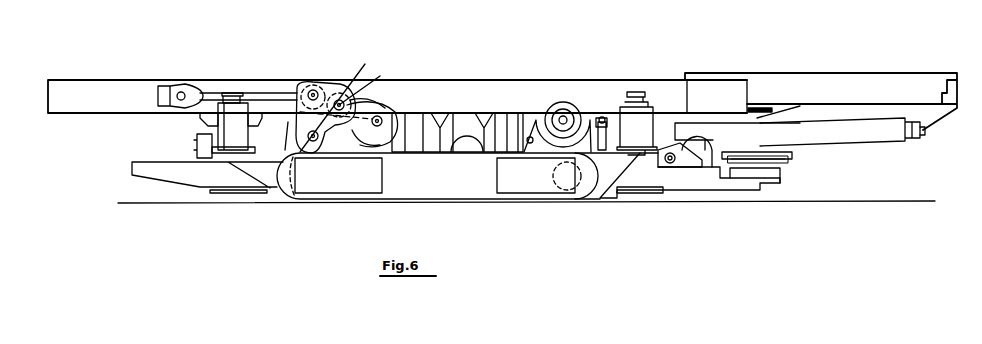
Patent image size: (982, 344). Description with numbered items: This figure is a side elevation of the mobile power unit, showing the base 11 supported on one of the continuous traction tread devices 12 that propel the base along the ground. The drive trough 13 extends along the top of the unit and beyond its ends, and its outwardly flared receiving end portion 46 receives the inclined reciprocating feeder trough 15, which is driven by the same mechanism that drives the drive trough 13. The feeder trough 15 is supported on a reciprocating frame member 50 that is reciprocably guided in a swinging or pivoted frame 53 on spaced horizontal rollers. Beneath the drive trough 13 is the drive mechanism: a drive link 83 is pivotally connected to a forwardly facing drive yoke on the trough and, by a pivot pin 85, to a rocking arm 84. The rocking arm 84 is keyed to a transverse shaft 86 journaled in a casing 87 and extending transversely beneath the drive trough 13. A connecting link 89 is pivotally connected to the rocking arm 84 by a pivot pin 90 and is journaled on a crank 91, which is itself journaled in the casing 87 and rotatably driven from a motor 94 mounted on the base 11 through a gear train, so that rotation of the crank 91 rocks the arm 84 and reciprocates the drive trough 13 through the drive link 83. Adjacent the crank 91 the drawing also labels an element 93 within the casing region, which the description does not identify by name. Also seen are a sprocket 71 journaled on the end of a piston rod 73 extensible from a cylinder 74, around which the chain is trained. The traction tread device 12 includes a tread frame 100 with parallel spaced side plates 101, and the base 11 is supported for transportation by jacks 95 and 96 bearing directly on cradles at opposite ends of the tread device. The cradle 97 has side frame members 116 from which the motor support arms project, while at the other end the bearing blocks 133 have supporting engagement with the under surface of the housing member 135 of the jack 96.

The base 11 is at (140, 182).
The continuous traction tread device 12 is at (578, 205).
The drive trough 13 is at (471, 80).
The feeder trough 15 is at (825, 73).
The receiving end portion 46 is at (737, 83).
The reciprocating frame member 50 is at (930, 133).
The pivoted frame 53 is at (848, 138).
The sprocket 71 is at (788, 156).
The piston rod 73 is at (727, 149).
The cylinder 74 is at (698, 140).
The drive link 83 is at (267, 93).
The rocking arm 84 is at (340, 101).
The pivot pin 85 is at (314, 90).
The transverse shaft 86 is at (313, 141).
The casing 87 is at (285, 150).
The connecting link 89 is at (383, 107).
The pivot pin 90 is at (345, 103).
The crank 91 is at (383, 117).
The roller housing 93 is at (440, 120).
The motor 94 is at (473, 143).
The jack 95 is at (647, 108).
The jack 96 is at (234, 91).
The cradle 97 is at (638, 140).
The tread frame 100 is at (460, 183).
The side plate 101 is at (418, 190).
The side frame member 116 is at (608, 173).
The bearing block 133 is at (238, 155).
The housing member 135 is at (205, 124).